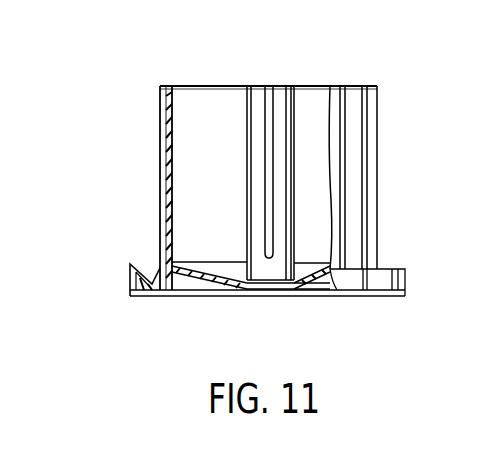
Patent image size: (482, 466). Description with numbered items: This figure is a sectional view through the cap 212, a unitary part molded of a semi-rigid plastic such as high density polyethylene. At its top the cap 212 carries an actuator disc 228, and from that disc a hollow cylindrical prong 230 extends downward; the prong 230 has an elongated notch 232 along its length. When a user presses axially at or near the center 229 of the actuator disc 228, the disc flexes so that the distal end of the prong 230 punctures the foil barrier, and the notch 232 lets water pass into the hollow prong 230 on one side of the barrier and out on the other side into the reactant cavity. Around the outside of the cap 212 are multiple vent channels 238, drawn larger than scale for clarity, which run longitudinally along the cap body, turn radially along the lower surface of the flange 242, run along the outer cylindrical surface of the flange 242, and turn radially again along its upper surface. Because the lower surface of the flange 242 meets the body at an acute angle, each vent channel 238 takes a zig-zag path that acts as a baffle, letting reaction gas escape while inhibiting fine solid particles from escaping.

The cap 212 is at (152, 105).
The actuator disc 228 is at (225, 282).
The center of actuator disc 229 is at (290, 286).
The cylindrical prong 230 is at (255, 115).
The elongated notch 232 is at (271, 106).
The vent channels 238 is at (163, 178).
The flange 242 is at (142, 283).